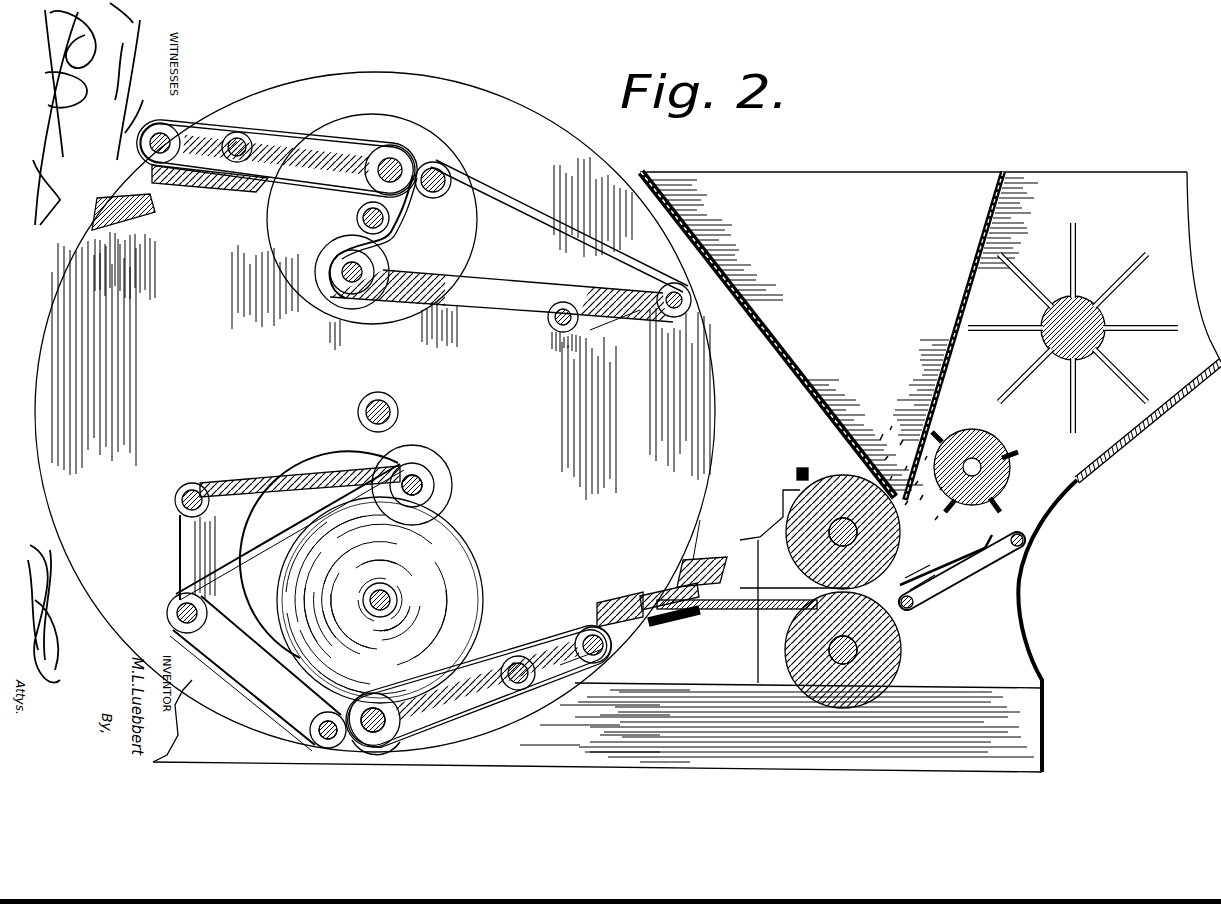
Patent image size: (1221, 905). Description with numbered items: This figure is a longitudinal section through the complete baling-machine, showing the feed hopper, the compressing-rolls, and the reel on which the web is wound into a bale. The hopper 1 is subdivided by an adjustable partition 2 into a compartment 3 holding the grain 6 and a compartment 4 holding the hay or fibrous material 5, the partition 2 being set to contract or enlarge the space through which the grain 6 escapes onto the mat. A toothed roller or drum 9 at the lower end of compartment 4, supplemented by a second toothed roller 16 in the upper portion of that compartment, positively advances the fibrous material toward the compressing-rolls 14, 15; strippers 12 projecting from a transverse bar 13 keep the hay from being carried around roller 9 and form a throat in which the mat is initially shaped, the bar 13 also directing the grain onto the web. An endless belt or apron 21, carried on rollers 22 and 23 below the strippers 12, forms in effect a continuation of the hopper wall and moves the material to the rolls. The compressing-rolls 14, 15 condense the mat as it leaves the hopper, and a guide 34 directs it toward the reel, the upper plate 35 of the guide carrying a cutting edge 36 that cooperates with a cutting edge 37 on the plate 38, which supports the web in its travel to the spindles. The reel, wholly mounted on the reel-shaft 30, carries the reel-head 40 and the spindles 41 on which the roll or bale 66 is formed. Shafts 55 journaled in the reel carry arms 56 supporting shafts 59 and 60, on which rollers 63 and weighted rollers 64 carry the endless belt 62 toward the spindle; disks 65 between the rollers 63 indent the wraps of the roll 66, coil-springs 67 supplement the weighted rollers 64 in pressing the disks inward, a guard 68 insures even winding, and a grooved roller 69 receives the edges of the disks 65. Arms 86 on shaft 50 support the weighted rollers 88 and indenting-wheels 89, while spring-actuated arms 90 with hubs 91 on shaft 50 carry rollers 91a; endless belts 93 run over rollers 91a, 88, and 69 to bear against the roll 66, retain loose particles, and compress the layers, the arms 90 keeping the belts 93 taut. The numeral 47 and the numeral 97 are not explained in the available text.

The hopper 1 is at (670, 459).
The partition 2 is at (988, 237).
The compartment 3 is at (782, 334).
The compartment 4 is at (1178, 267).
The hay or fibrous material 5 is at (1065, 486).
The grain 6 is at (911, 464).
The toothed roller or drum 9 is at (975, 464).
The strippers 12 is at (946, 544).
The transverse bar or support 13 is at (927, 559).
The compressing-roll 14 is at (843, 520).
The compressing-roll 15 is at (903, 660).
The toothed roller or drum 16 is at (1080, 300).
The endless belt or apron 21 is at (985, 575).
The roller 22 is at (1023, 545).
The roller 23 is at (925, 608).
The reel-shaft 30 is at (372, 423).
The guide 34 is at (740, 612).
The upper plate or wall 35 is at (724, 578).
The cutting edge 36 is at (675, 580).
The cutting edge 37 is at (98, 205).
The plate 38 is at (630, 604).
The reel-head 40 is at (562, 128).
The spindles 41 is at (358, 218).
The shaft 47 is at (393, 596).
The shaft 50 is at (560, 330).
The shaft 55 is at (243, 150).
The arm 56 is at (300, 150).
The shaft 59 is at (370, 736).
The shaft 60 is at (612, 650).
The endless belt or apron 62 is at (605, 726).
The rollers 63 is at (396, 752).
The rollers 64 is at (602, 662).
The disks 65 is at (400, 160).
The roll or bale 66 is at (456, 576).
The coil-springs 67 is at (425, 486).
The guard 68 is at (625, 606).
The roller 69 is at (435, 196).
The arms 86 is at (512, 320).
The weighted rollers 88 is at (366, 272).
The disks or indenting-wheels 89 is at (368, 309).
The arms 90 is at (160, 580).
The hubs 91 is at (575, 336).
The roller 91a is at (693, 300).
The endless belts 93 is at (225, 571).
The roller 97 is at (205, 623).